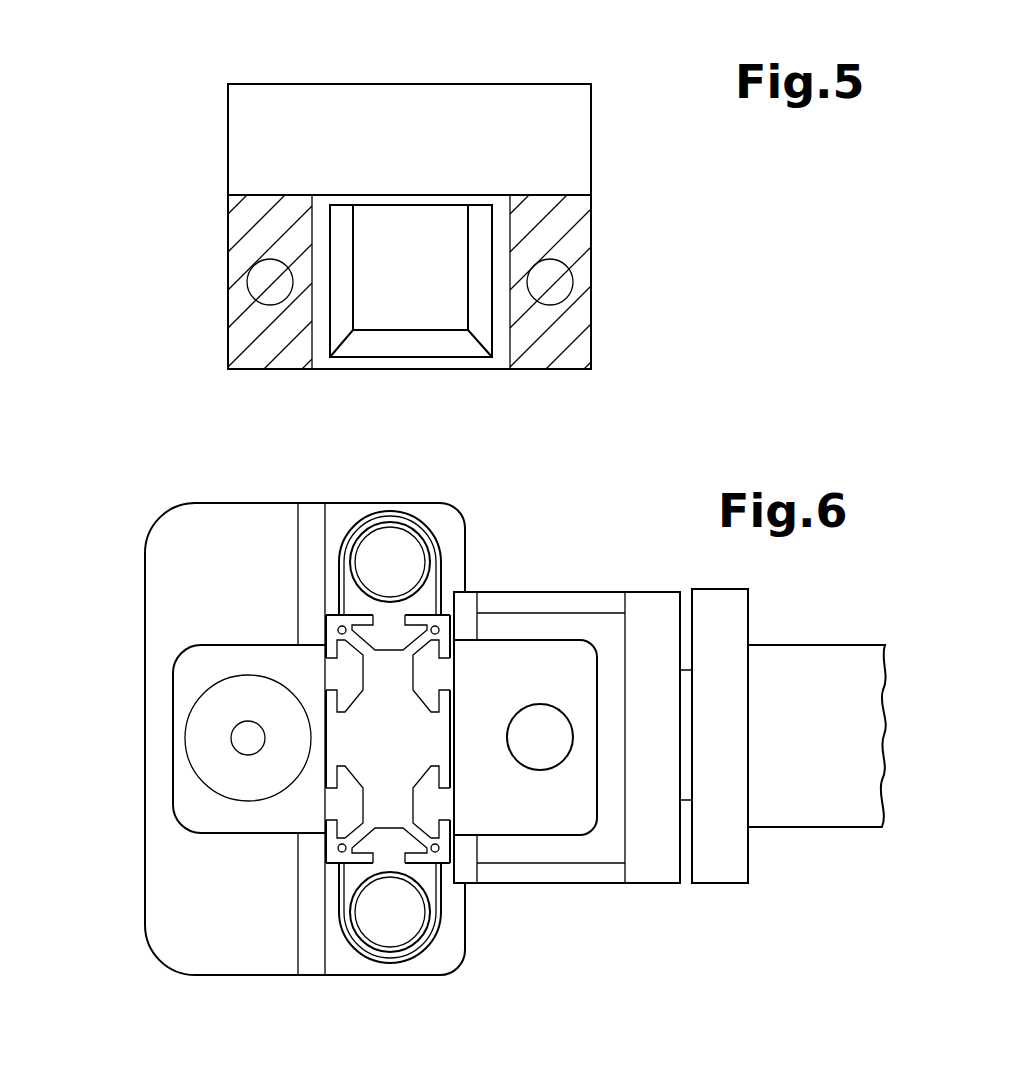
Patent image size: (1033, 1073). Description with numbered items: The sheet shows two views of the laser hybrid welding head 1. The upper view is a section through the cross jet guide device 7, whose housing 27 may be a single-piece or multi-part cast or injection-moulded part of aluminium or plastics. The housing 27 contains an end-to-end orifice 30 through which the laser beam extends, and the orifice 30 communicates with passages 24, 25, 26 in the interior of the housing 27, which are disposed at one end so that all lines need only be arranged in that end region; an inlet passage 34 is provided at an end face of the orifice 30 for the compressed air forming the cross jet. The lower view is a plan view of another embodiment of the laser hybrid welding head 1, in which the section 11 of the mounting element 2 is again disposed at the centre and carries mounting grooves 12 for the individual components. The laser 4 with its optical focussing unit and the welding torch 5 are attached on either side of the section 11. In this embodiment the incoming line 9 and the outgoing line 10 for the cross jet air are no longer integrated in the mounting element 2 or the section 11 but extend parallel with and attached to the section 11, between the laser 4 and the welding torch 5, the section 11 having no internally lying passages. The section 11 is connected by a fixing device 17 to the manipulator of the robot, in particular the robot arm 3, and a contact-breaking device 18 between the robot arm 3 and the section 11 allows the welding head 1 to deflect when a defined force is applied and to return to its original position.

In FIG. 6, the laser hybrid welding head 1 is at (130, 490).
In FIG. 6, the mounting element 2 is at (365, 735).
In FIG. 6, the robot arm 3 is at (812, 673).
In FIG. 6, the laser 4 is at (208, 750).
In FIG. 6, the welding torch 5 is at (540, 738).
In FIG. 5, the cross jet guide device 7 is at (405, 233).
In FIG. 6, the cross jet guide device 7 is at (173, 593).
In FIG. 6, the incoming line 9 is at (393, 556).
In FIG. 6, the outgoing line 10 is at (400, 918).
In FIG. 6, the section 11 is at (396, 727).
In FIG. 6, the mounting grooves 12 is at (317, 669).
In FIG. 6, the fixing device 17 is at (567, 723).
In FIG. 6, the contact-breaking device 18 is at (683, 905).
In FIG. 5, the passage 24 is at (555, 285).
In FIG. 5, the passage 25 is at (267, 284).
In FIG. 5, the passage 26 is at (402, 272).
In FIG. 5, the housing 27 is at (563, 142).
In FIG. 5, the orifice 30 is at (324, 258).
In FIG. 5, the inlet passage 34 is at (373, 351).